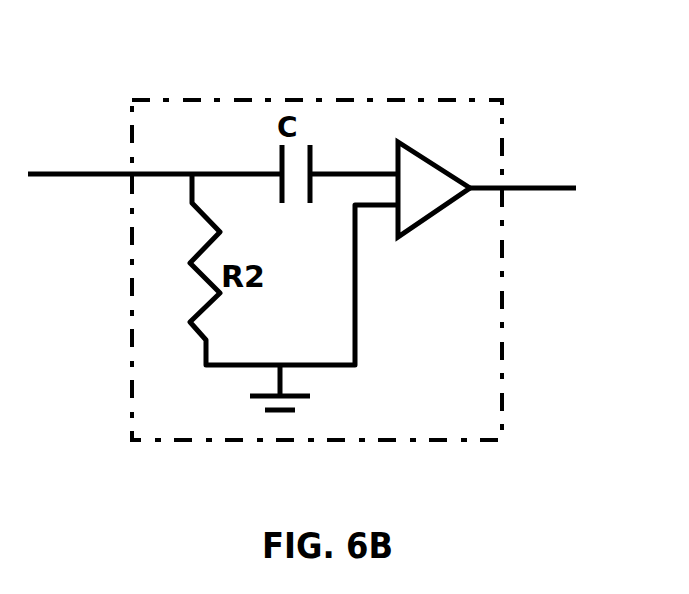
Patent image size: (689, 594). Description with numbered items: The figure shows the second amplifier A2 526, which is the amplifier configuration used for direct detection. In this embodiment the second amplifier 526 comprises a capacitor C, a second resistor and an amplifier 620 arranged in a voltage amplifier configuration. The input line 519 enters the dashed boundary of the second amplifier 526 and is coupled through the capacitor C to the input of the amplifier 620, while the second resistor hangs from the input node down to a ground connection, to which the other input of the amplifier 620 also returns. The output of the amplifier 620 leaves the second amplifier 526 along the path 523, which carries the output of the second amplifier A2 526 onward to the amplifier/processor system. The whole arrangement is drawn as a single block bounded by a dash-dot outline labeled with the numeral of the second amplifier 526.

The input signal line 519 is at (116, 171).
The path 523 is at (520, 185).
The second amplifier A2 526 is at (414, 100).
The amplifier 620 is at (408, 227).